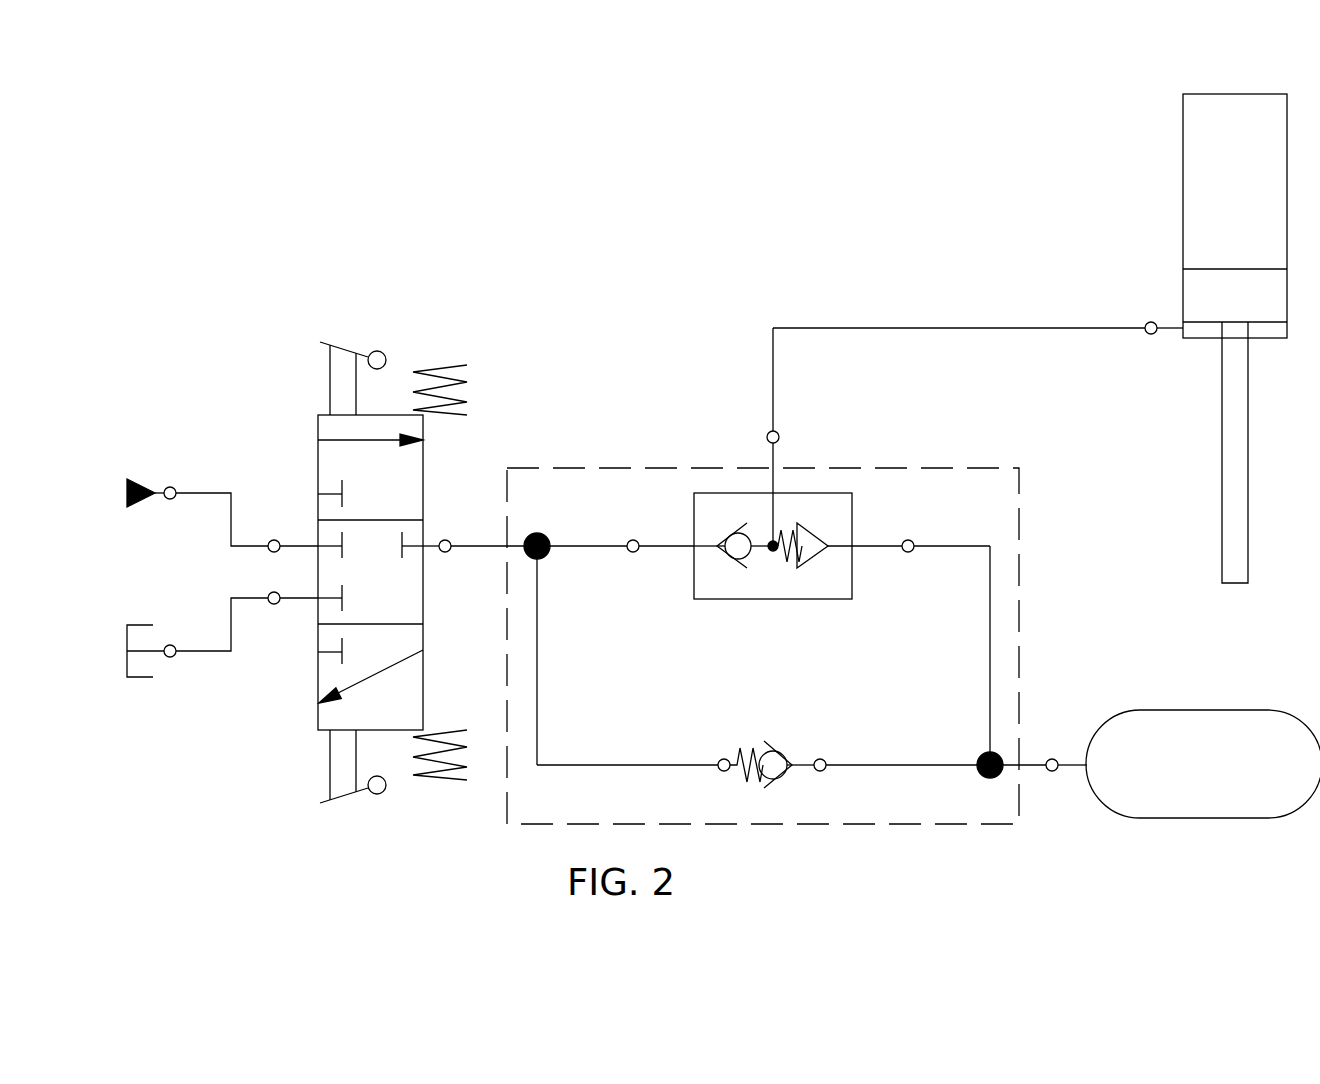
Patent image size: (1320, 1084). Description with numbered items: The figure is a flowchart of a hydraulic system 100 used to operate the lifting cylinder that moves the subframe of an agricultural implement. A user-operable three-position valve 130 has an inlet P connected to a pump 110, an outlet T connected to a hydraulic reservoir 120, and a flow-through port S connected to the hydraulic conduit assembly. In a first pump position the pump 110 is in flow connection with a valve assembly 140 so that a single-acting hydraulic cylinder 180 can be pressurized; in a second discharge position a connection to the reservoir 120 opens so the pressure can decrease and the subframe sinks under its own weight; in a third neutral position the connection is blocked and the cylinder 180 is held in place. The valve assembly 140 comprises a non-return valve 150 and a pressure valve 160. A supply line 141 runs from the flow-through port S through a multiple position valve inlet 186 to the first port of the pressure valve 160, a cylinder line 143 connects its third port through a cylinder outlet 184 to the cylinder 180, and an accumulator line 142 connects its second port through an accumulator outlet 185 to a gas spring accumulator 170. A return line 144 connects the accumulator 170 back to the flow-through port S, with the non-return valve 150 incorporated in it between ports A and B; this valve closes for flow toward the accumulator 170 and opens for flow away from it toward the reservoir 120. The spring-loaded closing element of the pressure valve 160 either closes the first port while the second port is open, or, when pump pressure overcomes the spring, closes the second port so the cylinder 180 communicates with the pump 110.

The hydraulic system 100 is at (292, 352).
The pump 110 is at (140, 486).
The hydraulic reservoir 120 is at (137, 677).
The three-position valve 130 is at (423, 472).
The valve assembly 140 is at (507, 824).
The supply line 141 is at (592, 546).
The accumulator line 142 is at (990, 635).
The cylinder line 143 is at (773, 482).
The return line 144 is at (618, 765).
The non-return valve 150 is at (746, 782).
The pressure valve 160 is at (722, 510).
The accumulator 170 is at (1143, 799).
The hydraulic cylinder 180 is at (1248, 178).
The cylinder outlet 184 is at (778, 437).
The accumulator outlet 185 is at (997, 752).
The multiple position valve inlet 186 is at (537, 540).